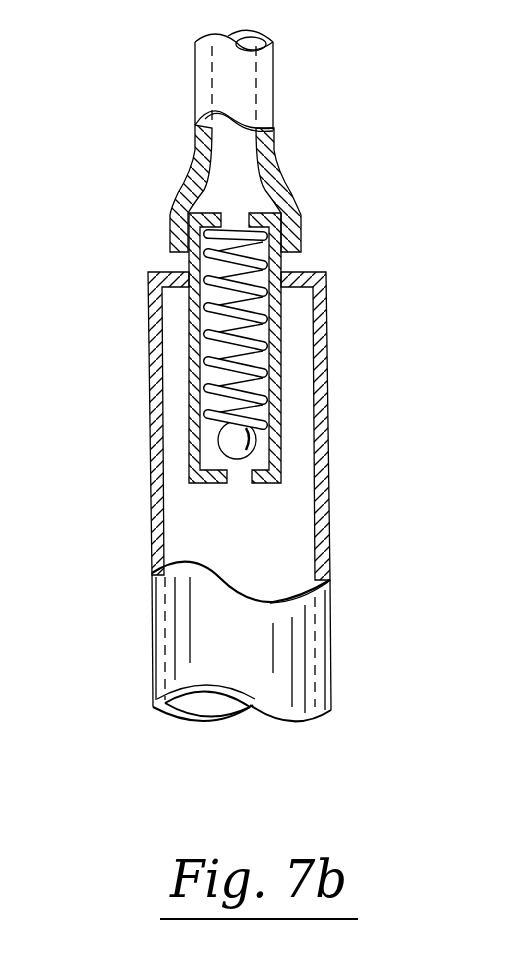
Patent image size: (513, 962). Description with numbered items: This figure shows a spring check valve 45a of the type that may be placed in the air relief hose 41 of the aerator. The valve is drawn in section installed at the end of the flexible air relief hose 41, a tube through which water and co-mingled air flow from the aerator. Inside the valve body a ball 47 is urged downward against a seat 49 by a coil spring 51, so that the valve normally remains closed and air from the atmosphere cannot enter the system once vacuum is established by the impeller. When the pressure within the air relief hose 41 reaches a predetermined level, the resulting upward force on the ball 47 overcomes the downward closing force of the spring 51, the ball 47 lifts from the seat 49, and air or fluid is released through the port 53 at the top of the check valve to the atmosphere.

The air relief hose 41 is at (182, 658).
The spring check valve 45a is at (128, 504).
The ball 47 is at (232, 441).
The seat 49 is at (235, 468).
The spring 51 is at (273, 352).
The port 53 is at (229, 217).